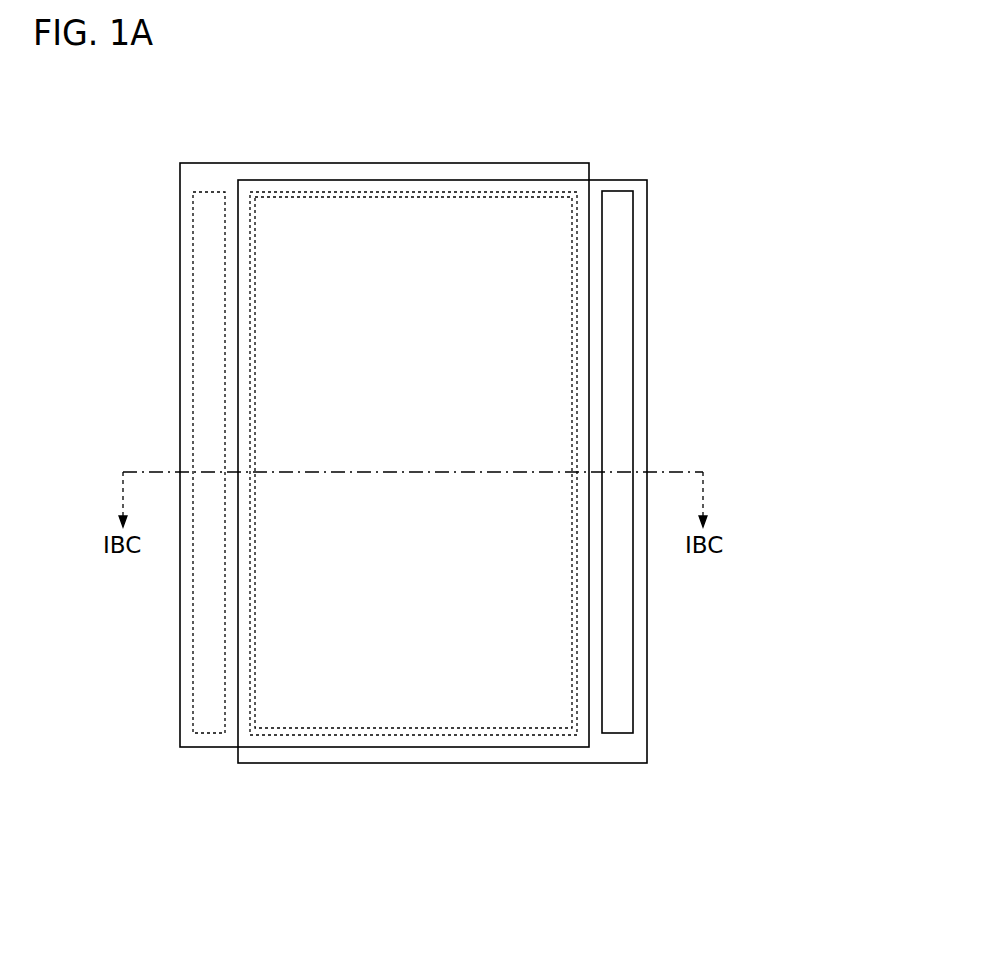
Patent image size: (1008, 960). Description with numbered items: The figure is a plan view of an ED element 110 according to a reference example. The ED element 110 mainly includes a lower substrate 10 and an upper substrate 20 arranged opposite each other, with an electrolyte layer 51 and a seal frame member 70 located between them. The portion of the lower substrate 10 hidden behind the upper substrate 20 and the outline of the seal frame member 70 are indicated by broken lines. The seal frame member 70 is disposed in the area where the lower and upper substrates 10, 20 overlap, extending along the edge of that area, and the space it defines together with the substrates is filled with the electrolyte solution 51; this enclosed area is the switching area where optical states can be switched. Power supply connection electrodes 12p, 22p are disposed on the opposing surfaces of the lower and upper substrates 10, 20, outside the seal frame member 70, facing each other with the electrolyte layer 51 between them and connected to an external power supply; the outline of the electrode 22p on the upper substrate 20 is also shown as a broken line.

The upper substrate 20 is at (330, 455).
The lower substrate 10 is at (519, 471).
The power supply connection electrode 22p is at (140, 462).
The power supply connection electrode 12p is at (687, 462).
The seal frame member 70 is at (413, 432).
The electrolyte layer (electrolyte solution) 51 is at (462, 429).
The ED element 110 is at (726, 817).